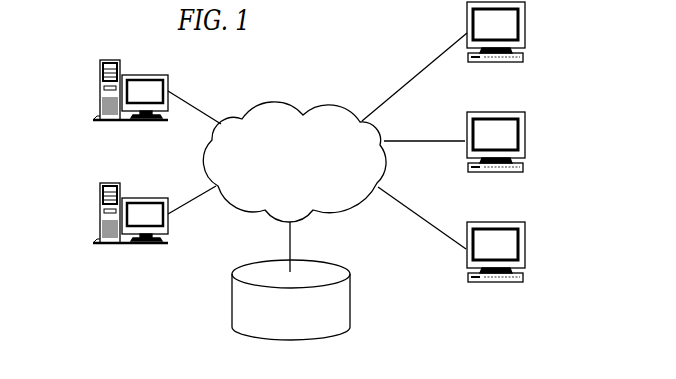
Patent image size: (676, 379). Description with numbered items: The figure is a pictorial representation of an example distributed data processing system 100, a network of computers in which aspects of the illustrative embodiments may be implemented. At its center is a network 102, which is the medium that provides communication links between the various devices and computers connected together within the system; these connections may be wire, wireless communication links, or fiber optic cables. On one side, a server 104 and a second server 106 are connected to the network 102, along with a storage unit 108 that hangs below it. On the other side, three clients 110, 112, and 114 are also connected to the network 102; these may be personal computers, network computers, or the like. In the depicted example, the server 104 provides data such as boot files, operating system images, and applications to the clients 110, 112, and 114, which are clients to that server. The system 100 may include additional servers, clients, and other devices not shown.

The distributed data processing system 100 is at (350, 63).
The network 102 is at (282, 103).
The server 104 is at (100, 91).
The server 106 is at (100, 214).
The storage unit 108 is at (232, 298).
The client 110 is at (526, 33).
The client 112 is at (526, 142).
The client 114 is at (526, 251).